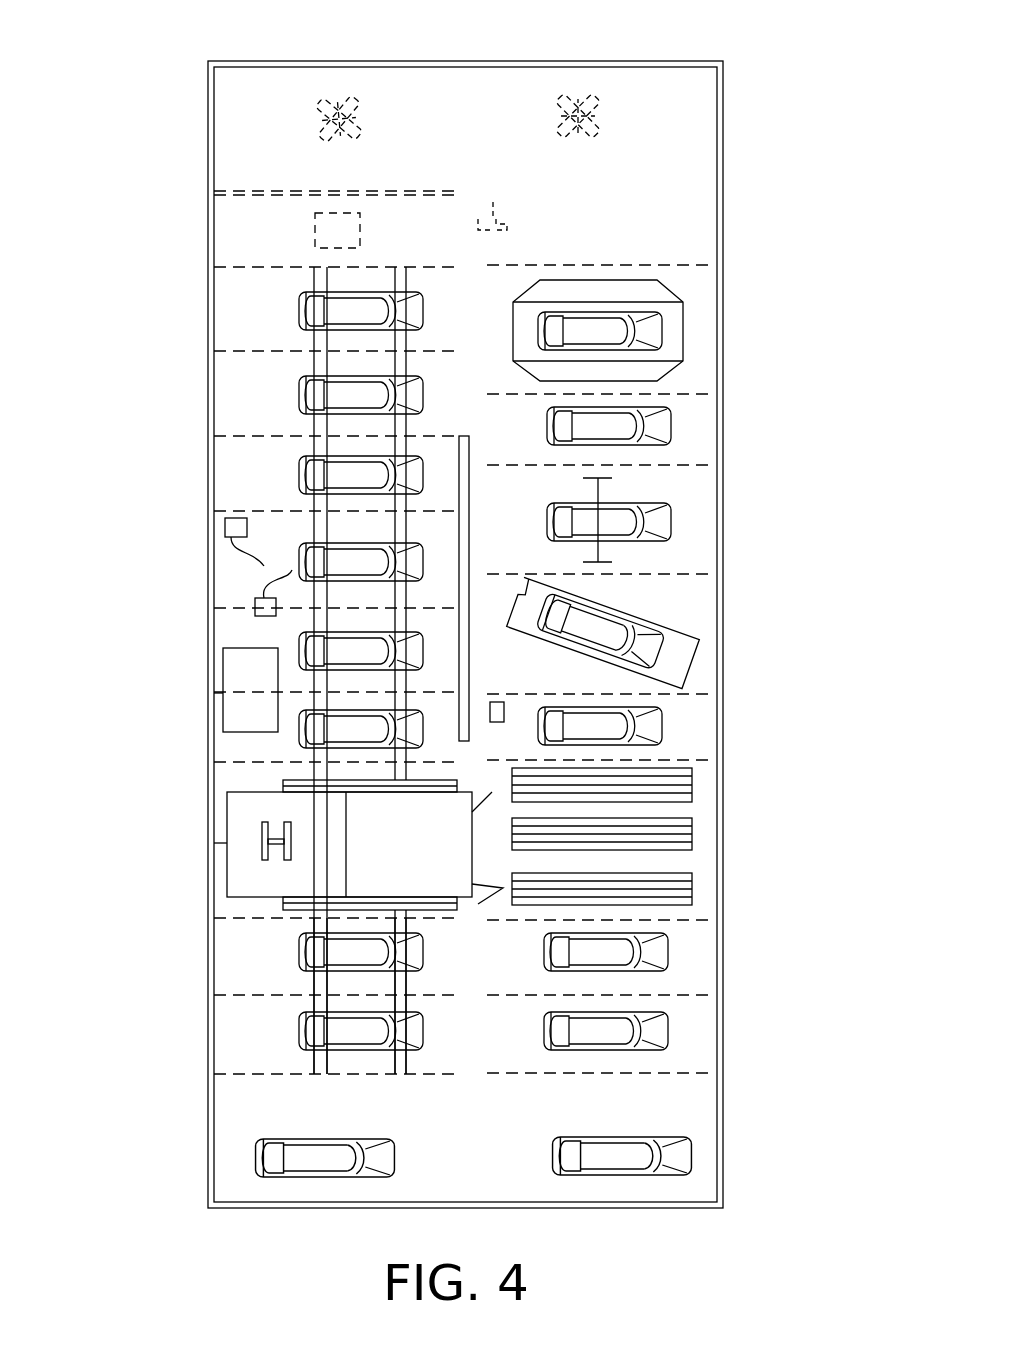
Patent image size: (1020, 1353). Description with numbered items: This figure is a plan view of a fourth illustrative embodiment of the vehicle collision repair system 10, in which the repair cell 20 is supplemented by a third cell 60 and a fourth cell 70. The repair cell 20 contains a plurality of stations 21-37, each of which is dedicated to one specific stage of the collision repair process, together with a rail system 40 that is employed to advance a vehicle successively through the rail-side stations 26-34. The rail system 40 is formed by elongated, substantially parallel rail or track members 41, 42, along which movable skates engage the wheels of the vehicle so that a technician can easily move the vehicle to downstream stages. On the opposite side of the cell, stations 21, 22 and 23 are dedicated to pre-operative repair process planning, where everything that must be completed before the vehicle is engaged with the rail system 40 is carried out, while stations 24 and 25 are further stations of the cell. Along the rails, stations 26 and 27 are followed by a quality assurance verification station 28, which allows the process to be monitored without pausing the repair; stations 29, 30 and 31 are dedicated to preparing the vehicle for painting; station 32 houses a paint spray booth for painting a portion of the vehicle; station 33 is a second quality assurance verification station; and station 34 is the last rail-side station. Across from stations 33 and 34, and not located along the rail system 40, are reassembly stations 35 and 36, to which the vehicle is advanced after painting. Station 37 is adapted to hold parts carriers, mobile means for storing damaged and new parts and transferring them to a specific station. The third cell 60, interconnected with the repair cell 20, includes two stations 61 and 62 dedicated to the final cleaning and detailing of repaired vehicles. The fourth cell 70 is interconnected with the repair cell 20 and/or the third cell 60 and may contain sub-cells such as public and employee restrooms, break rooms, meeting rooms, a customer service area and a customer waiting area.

The vehicle collision repair system 10 is at (163, 83).
The fourth cell 70 is at (612, 75).
The repair cell 20 is at (232, 285).
The station 26 is at (232, 332).
The station 27 is at (232, 404).
The quality assurance verification station 28 is at (232, 486).
The paint preparation station 29 is at (232, 560).
The paint preparation station 30 is at (232, 632).
The paint preparation station 31 is at (232, 749).
The painting station 32 is at (232, 850).
The quality assurance verification station 33 is at (232, 962).
The station 34 is at (232, 1033).
The rail system 40 is at (420, 1003).
The rail or track member 41 is at (410, 1075).
The rail or track member 42 is at (332, 1075).
The third cell 60 is at (232, 1124).
The cleaning and detailing station 61 is at (343, 1193).
The cleaning and detailing station 62 is at (615, 1187).
The station 25 is at (699, 321).
The station 24 is at (699, 434).
The pre-operative repair process planning station 23 is at (699, 515).
The pre-operative repair process planning station 22 is at (699, 617).
The pre-operative repair process planning station 21 is at (699, 720).
The parts carrier station 37 is at (699, 807).
The reassembly station 36 is at (699, 947).
The reassembly station 35 is at (699, 1033).